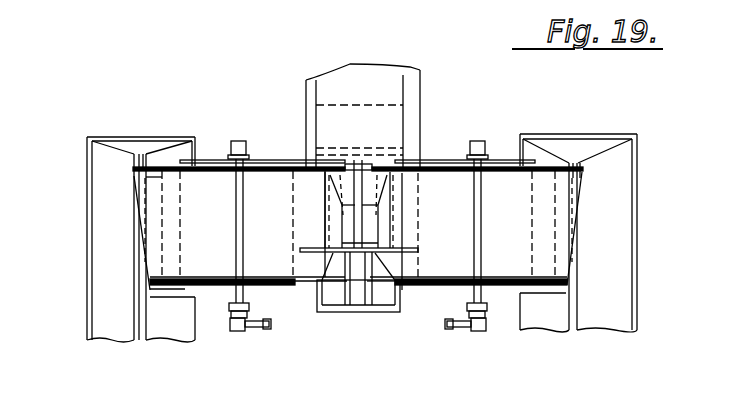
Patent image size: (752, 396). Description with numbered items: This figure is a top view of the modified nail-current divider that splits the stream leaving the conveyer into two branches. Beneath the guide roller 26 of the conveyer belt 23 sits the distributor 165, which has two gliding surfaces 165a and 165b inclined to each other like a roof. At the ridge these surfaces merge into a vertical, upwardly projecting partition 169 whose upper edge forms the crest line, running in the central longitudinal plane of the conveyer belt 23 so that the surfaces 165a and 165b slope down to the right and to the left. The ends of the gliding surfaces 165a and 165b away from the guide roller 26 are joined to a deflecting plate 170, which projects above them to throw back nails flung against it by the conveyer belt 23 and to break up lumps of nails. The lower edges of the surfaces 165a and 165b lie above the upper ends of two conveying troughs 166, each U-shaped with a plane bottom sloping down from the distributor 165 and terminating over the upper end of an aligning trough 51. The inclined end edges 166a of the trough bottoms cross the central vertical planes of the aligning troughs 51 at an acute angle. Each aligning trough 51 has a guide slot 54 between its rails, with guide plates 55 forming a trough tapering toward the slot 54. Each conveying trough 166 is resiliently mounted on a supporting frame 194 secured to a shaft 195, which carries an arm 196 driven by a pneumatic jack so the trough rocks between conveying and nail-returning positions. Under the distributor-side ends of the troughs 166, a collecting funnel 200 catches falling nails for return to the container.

The conveyer belt 23 is at (378, 70).
The guide roller 26 is at (316, 122).
The aligning trough 51 is at (108, 205).
The guide slot 54 is at (145, 296).
The guide plates 55 is at (160, 330).
The distributor 165 is at (364, 169).
The gliding surface 165a is at (332, 182).
The gliding surface 165b is at (387, 178).
The conveying trough 166 is at (222, 245).
The end of conveying trough bottom 166a is at (142, 238).
The partition 169 is at (357, 172).
The deflecting plate 170 is at (310, 253).
The supporting frame 194 is at (213, 162).
The shaft 195 is at (241, 204).
The arm 196 is at (257, 332).
The collecting funnel 200 is at (383, 297).